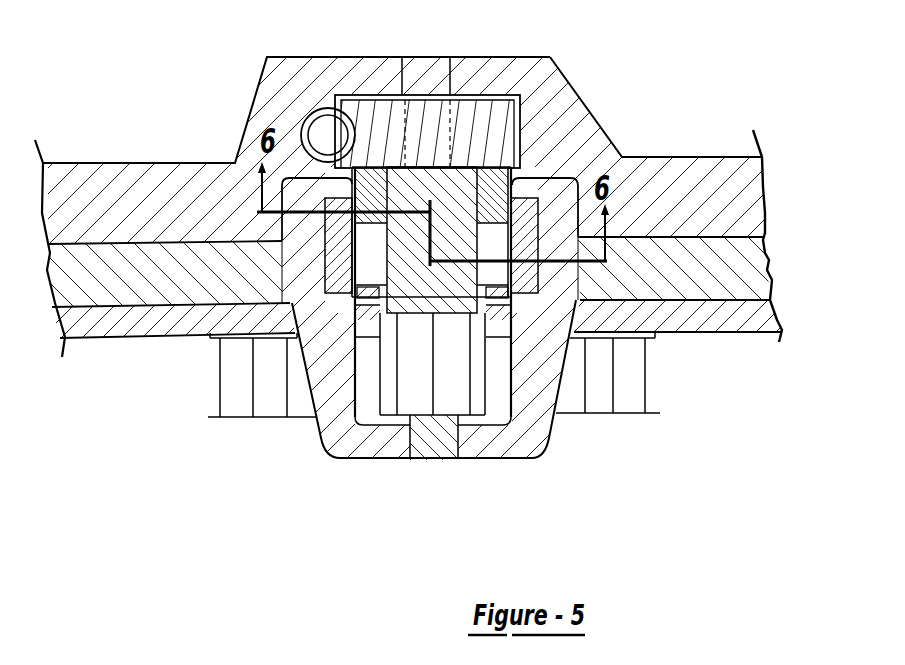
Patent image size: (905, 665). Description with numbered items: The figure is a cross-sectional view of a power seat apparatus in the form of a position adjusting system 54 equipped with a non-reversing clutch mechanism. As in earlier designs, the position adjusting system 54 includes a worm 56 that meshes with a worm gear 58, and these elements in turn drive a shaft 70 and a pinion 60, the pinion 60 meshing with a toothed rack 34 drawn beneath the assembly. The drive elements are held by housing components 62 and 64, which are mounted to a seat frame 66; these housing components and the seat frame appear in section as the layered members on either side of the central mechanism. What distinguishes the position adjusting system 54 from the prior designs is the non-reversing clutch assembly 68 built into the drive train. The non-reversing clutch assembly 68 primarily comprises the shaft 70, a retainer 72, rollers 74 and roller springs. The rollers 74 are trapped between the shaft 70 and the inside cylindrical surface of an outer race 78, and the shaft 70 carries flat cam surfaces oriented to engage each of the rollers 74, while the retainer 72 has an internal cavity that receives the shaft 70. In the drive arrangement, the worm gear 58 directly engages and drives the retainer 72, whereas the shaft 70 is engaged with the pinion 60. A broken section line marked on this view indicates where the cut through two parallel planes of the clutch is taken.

The toothed rack 34 is at (618, 385).
The position adjusting system 54 is at (140, 118).
The worm 56 is at (320, 142).
The worm gear 58 is at (420, 125).
The pinion 60 is at (417, 395).
The housing component 62 is at (668, 188).
The housing component 64 is at (740, 245).
The seat frame 66 is at (712, 322).
The non-reversing clutch assembly 68 is at (447, 197).
The shaft 70 is at (437, 222).
The retainer 72 is at (521, 178).
The rollers 74 is at (373, 270).
The outer race 78 is at (325, 278).